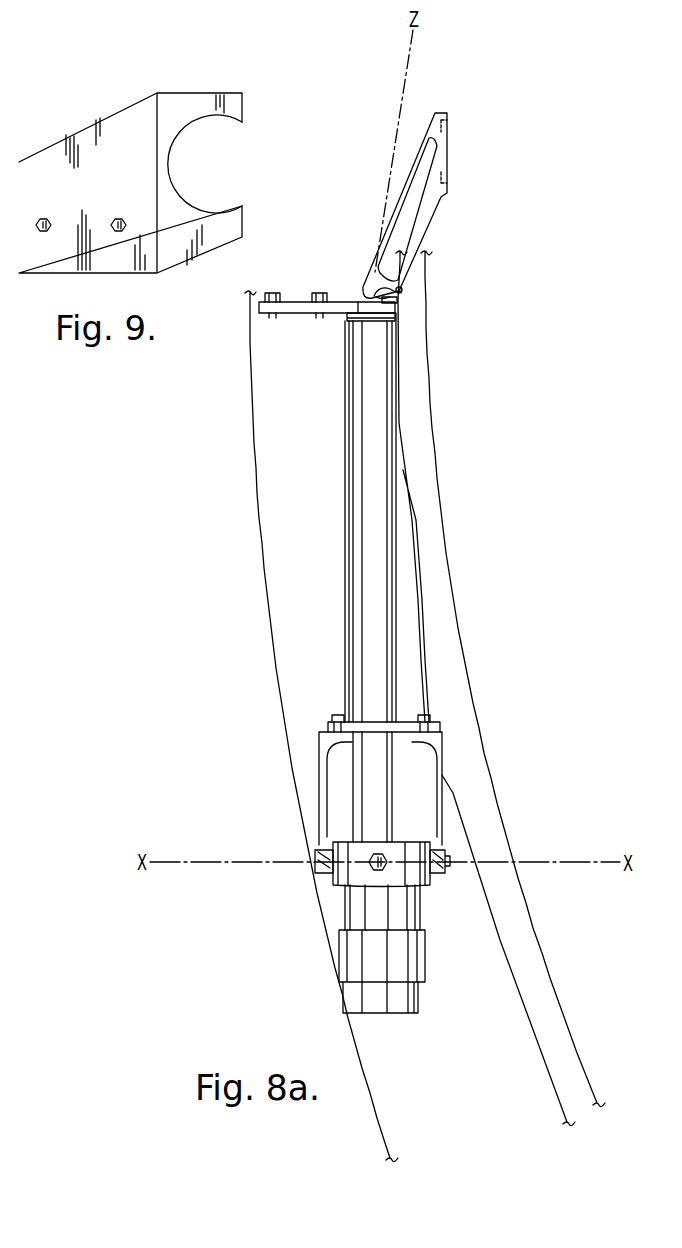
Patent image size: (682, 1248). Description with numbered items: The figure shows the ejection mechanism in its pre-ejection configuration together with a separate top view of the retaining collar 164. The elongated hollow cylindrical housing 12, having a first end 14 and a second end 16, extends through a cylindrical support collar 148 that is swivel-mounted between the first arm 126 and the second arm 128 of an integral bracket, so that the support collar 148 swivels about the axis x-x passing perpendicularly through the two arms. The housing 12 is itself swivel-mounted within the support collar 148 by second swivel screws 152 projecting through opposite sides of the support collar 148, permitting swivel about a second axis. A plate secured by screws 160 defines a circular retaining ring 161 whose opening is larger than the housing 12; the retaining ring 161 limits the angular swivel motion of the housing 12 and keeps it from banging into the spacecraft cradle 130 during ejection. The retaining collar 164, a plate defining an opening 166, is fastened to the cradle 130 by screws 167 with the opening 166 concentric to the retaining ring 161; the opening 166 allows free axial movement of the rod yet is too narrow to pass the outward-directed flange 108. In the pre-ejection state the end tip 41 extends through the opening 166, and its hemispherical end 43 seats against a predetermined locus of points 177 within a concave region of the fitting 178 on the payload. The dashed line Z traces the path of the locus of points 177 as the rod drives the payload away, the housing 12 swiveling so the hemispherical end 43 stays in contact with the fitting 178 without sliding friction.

In FIG. 9, the retaining collar 164 is at (115, 112).
In FIG. 9, the opening 166 is at (226, 143).
In FIG. 9, the screws 167 is at (115, 220).
In FIG. 8A, the screws 167 is at (318, 292).
In FIG. 8A, the fitting 178 is at (407, 193).
In FIG. 8A, the locus of points 177 is at (402, 291).
In FIG. 8A, the hemispherical end 43 is at (398, 293).
In FIG. 8A, the end tip 41 is at (390, 302).
In FIG. 8A, the outward-directed flange 108 is at (345, 318).
In FIG. 8A, the second end 16 is at (345, 370).
In FIG. 8A, the spacecraft cradle 130 is at (418, 380).
In FIG. 8A, the housing 12 is at (343, 623).
In FIG. 8A, the retaining ring 161 is at (375, 720).
In FIG. 8A, the screws 160 is at (422, 708).
In FIG. 8A, the first arm 126 is at (323, 785).
In FIG. 8A, the second arm 128 is at (442, 793).
In FIG. 8A, the support collar 148 is at (428, 843).
In FIG. 8A, the second swivel screws 152 is at (375, 854).
In FIG. 8A, the first end 14 is at (343, 952).